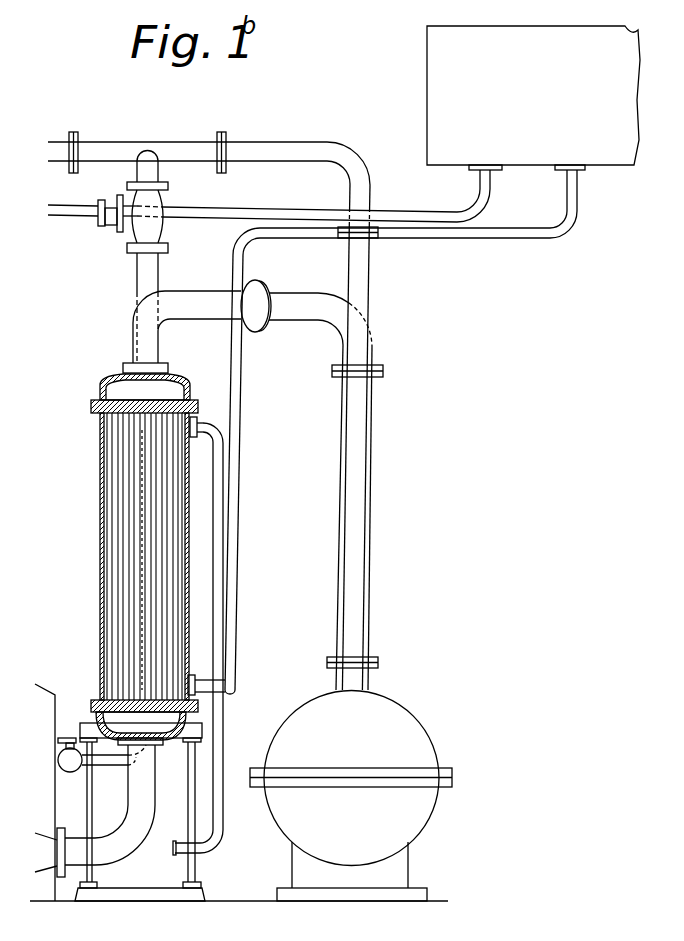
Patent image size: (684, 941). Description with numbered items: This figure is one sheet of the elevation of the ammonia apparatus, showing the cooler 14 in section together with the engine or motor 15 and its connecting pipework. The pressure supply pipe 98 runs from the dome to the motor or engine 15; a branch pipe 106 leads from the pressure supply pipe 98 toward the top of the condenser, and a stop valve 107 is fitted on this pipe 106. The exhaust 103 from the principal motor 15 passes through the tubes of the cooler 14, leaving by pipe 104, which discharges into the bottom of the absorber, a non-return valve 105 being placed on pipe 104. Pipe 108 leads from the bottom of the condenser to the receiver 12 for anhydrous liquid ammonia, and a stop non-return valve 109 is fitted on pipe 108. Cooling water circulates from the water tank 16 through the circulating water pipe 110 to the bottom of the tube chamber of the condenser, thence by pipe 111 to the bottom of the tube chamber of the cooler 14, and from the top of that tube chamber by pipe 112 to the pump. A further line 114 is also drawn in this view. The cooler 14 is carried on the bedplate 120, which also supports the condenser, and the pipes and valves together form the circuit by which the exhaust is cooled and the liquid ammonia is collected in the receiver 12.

The receiver for anhydrous liquid ammonia 12 is at (41, 792).
The cooler 14 is at (100, 502).
The engine or motor 15 is at (351, 796).
The water tank 16 is at (533, 98).
The pressure supply pipe 98 is at (388, 600).
The exhaust 103 is at (376, 478).
The pipe 104 is at (110, 805).
The non-return valve 105 is at (45, 852).
The pipe 106 is at (137, 282).
The stop valve 107 is at (128, 228).
The pipe 108 is at (114, 770).
The stop non-return valve 109 is at (71, 770).
The circulating water pipe 110 is at (541, 243).
The pipe 111 is at (140, 550).
The pipe 112 is at (215, 470).
The pipe 114 is at (323, 213).
The bedplate 120 is at (140, 812).